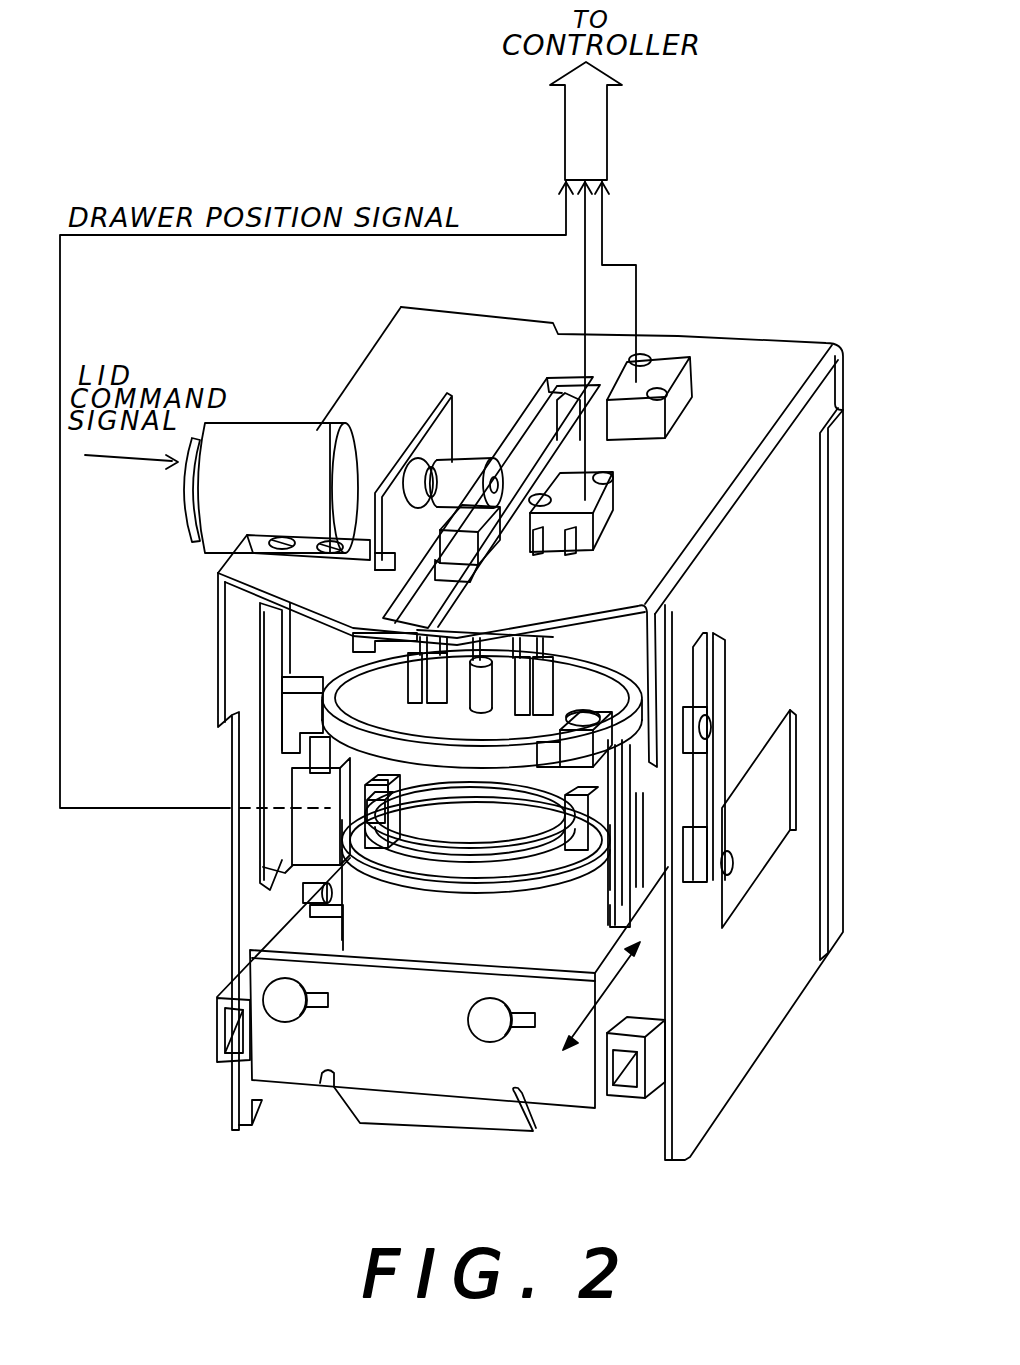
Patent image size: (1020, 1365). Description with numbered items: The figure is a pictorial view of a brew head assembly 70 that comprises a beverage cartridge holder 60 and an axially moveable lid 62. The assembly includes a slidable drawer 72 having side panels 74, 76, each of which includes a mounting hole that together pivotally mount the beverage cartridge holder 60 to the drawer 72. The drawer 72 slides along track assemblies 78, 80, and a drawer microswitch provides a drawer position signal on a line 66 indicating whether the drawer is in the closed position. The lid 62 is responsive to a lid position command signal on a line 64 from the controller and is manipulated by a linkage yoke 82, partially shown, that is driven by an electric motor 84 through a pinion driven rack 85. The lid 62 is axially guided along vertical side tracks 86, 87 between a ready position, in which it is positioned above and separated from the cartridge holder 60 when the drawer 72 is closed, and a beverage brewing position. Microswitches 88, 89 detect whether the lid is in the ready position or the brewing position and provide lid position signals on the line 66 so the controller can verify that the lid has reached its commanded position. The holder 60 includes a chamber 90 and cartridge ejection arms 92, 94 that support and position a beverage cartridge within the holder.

The beverage cartridge holder 60 is at (333, 935).
The axially moveable lid 62 is at (317, 715).
The line 64 is at (146, 472).
The line 66 is at (604, 143).
The brew head assembly 70 is at (752, 150).
The slidable drawer 72 is at (412, 1052).
The side panel 74 is at (287, 920).
The side panel 76 is at (615, 990).
The track assembly 78 is at (217, 1021).
The track assembly 80 is at (645, 1093).
The linkage yoke 82 is at (543, 640).
The electric motor 84 is at (243, 440).
The pinion driven rack 85 is at (462, 540).
The vertical side track 86 is at (255, 636).
The vertical side track 87 is at (710, 757).
The microswitch 88 is at (600, 491).
The microswitch 89 is at (687, 357).
The chamber 90 is at (492, 855).
The cartridge ejection arm 92 is at (390, 820).
The cartridge ejection arm 94 is at (565, 800).